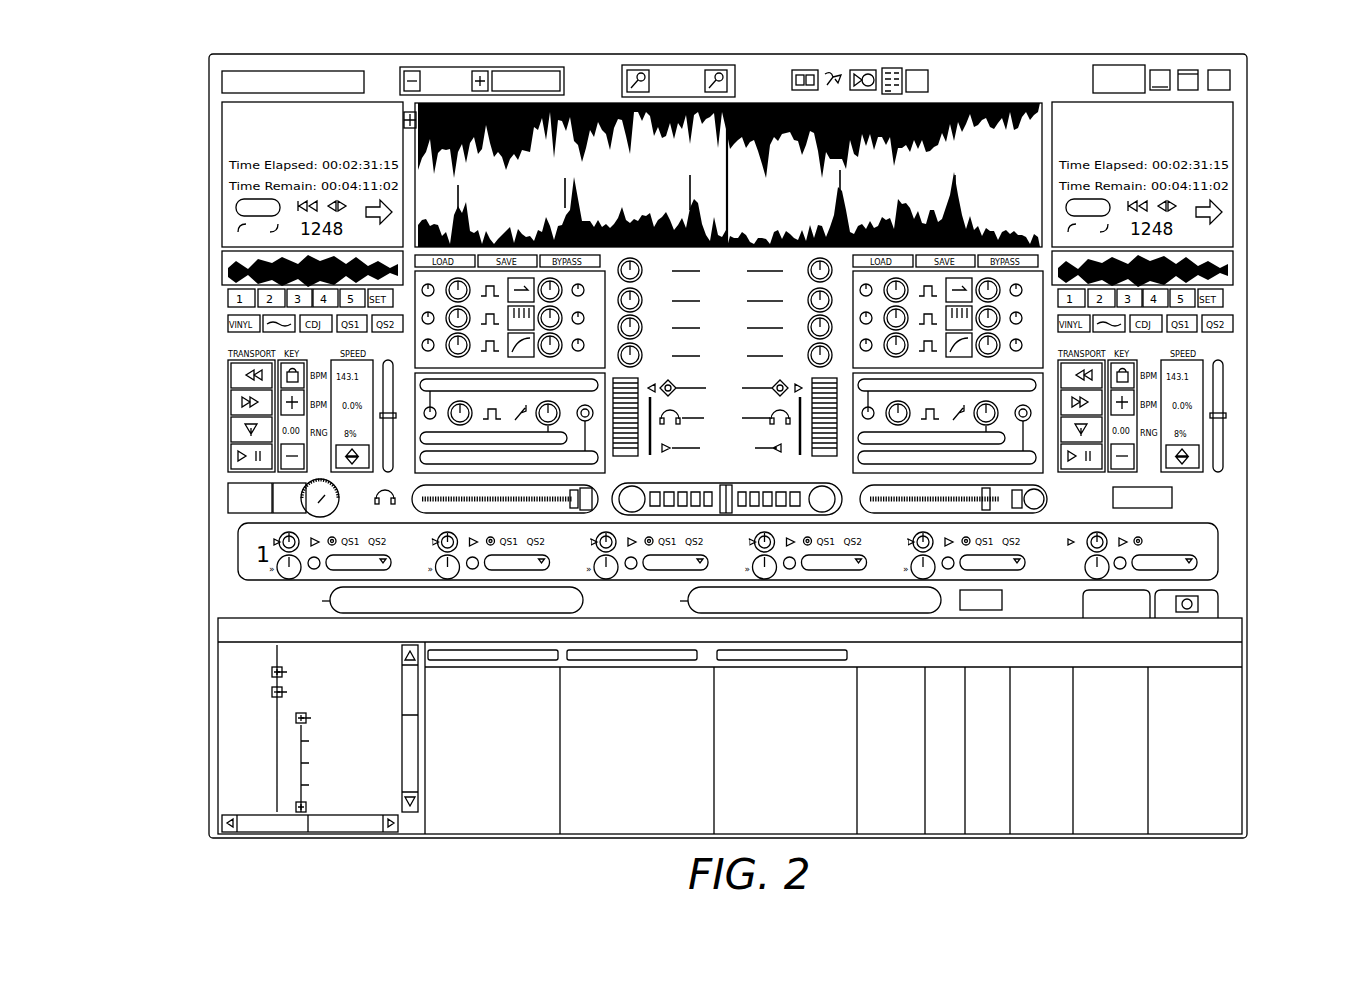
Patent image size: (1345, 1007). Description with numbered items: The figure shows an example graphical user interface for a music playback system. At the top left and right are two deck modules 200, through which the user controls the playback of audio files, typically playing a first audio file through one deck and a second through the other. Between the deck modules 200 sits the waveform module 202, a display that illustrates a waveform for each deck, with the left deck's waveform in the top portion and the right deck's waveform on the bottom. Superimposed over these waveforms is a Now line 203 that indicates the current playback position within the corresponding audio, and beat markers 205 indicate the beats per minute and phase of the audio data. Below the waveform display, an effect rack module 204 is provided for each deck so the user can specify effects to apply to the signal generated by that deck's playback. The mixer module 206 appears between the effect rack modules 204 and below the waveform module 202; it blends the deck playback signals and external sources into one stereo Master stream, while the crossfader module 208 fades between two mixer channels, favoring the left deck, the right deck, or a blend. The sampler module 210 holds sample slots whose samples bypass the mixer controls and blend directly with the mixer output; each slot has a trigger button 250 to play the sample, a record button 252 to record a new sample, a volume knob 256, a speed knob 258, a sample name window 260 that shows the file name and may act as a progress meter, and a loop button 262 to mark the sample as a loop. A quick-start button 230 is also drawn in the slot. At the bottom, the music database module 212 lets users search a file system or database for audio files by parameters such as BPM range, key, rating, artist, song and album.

The deck module 200 is at (228, 247).
The waveform module 202 is at (750, 103).
The Now line 203 is at (727, 183).
The effect rack module 204 is at (538, 272).
The beat markers 205 is at (955, 160).
The mixer module 206 is at (686, 266).
The crossfader module 208 is at (740, 482).
The sampler module 210 is at (240, 558).
The music database module 212 is at (803, 743).
The quick start button 230 is at (1200, 543).
The trigger button 250 is at (1123, 540).
The record button 252 is at (1139, 540).
The volume knob 256 is at (1096, 532).
The speed knob 258 is at (1087, 577).
The sample name window 260 is at (1200, 562).
The loop button 262 is at (1125, 567).